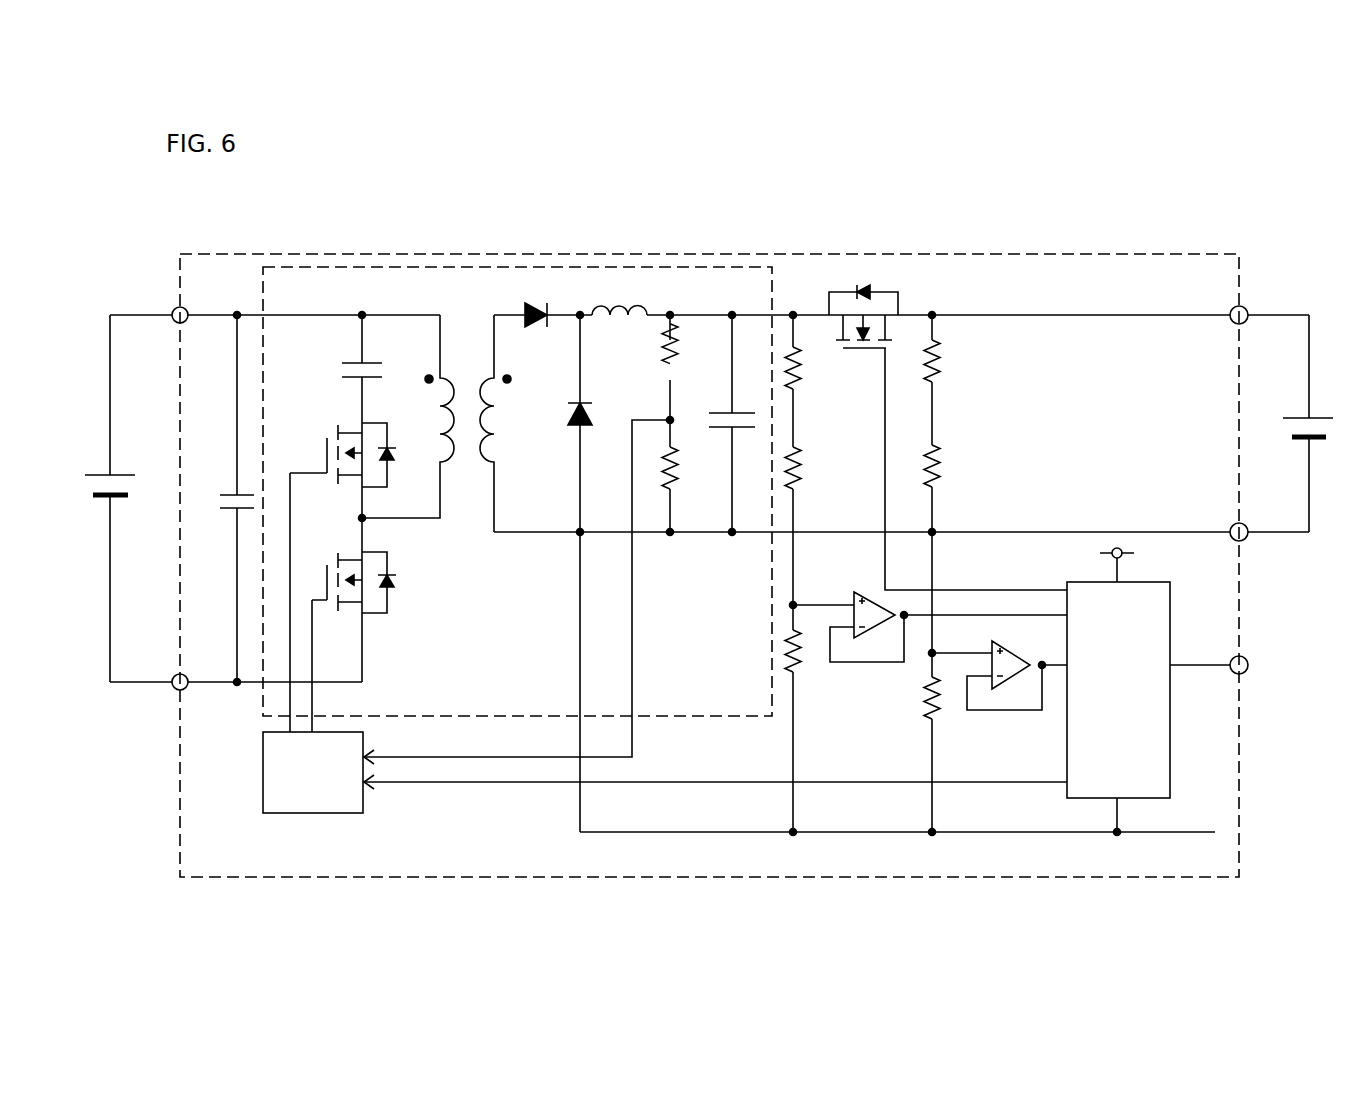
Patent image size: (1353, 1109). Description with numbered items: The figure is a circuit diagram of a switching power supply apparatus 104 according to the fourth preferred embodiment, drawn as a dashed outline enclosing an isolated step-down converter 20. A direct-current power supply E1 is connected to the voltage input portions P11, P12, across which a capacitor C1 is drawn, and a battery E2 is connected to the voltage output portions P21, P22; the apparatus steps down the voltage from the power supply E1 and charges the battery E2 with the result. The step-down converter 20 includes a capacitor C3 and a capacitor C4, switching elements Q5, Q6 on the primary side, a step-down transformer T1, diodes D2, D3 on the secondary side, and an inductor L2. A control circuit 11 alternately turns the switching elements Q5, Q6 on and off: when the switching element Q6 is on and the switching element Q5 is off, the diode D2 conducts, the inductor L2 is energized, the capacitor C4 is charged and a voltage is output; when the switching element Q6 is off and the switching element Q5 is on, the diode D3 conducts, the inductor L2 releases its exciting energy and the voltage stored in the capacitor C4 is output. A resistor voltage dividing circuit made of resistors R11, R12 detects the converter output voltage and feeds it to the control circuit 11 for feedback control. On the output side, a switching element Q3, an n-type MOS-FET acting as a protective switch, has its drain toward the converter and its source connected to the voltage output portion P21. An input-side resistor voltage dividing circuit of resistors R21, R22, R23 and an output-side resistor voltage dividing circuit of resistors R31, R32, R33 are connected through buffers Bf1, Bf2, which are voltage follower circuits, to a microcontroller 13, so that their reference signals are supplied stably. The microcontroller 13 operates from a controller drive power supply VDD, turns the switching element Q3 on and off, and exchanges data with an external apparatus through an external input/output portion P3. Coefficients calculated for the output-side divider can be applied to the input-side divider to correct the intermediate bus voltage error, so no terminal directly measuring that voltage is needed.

The switching power supply apparatus 104 is at (223, 253).
The isolated step-down converter 20 is at (304, 266).
The control circuit 11 is at (262, 750).
The microcontroller 13 is at (1172, 605).
The voltage input portion P11 is at (161, 305).
The voltage input portion P12 is at (161, 695).
The voltage output portion P21 is at (1257, 305).
The voltage output portion P22 is at (1259, 542).
The external input/output portion P3 is at (1225, 676).
The direct-current power supply E1 is at (105, 498).
The battery E2 is at (1311, 423).
The capacitor C1 is at (226, 498).
The capacitor C3 is at (355, 369).
The capacitor C4 is at (726, 423).
The switching element Q5 is at (343, 470).
The switching element Q6 is at (354, 600).
The switching element Q3 is at (948, 426).
The step-down transformer T1 is at (464, 333).
The diode D2 is at (534, 328).
The diode D3 is at (568, 573).
The inductor L2 is at (619, 323).
The resistor R11 is at (650, 367).
The resistor R12 is at (693, 476).
The resistor R21 is at (813, 381).
The resistor R22 is at (813, 526).
The resistor R23 is at (813, 718).
The resistor R31 is at (951, 380).
The resistor R32 is at (951, 549).
The resistor R33 is at (909, 742).
The buffer Bf1 is at (930, 613).
The buffer Bf2 is at (999, 665).
The controller drive power supply VDD is at (1093, 562).